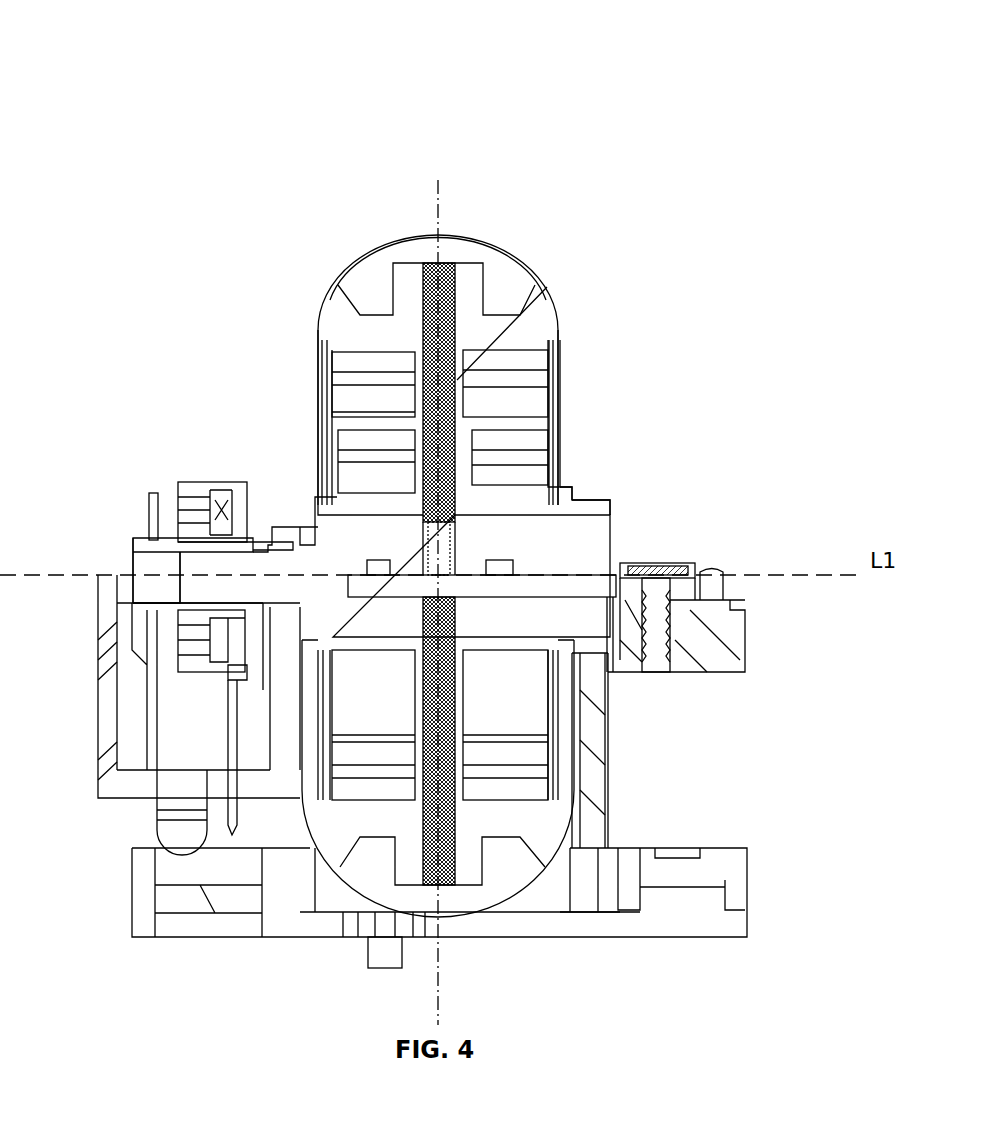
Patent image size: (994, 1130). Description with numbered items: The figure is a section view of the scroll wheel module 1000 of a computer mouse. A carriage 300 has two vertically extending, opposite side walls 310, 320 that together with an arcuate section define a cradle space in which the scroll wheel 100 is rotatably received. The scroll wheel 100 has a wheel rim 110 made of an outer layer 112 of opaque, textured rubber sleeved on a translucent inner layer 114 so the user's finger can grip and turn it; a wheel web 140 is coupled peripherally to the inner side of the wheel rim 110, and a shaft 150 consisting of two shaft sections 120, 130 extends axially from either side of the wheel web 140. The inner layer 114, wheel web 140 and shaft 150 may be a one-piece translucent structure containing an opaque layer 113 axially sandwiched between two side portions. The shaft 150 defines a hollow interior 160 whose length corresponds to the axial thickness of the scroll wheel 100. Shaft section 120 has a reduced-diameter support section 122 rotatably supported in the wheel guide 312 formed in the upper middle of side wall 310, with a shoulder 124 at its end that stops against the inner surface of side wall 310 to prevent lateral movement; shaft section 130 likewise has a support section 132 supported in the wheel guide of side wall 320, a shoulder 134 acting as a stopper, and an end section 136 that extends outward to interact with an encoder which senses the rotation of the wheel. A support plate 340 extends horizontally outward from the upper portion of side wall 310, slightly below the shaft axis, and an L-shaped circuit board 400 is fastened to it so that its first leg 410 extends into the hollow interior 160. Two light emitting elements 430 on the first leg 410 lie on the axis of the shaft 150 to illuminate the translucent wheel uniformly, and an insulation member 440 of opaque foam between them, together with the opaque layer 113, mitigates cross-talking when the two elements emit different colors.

The scroll wheel module 1000 is at (712, 78).
The scroll wheel 100 is at (577, 307).
The wheel rim 110 is at (303, 283).
The outer layer 112 is at (507, 263).
The opaque layer 113 is at (457, 290).
The inner layer 114 is at (547, 337).
The wheel web 140 is at (463, 433).
The shaft 150 is at (477, 490).
The shaft section 120 is at (545, 500).
The shoulder 124 is at (573, 487).
The support section 122 is at (603, 503).
The hollow interior 160 is at (585, 548).
The shaft section 130 is at (365, 500).
The support section 132 is at (283, 555).
The shoulder 134 is at (310, 535).
The end section 136 is at (200, 570).
The light emitting elements 430 is at (377, 560).
The insulation member 440 is at (452, 543).
The first leg 410 is at (517, 592).
The circuit board 400 is at (735, 575).
The support plate 340 is at (725, 660).
The wheel guide 312 is at (592, 655).
The side wall 310 is at (600, 745).
The carriage 300 is at (590, 820).
The side wall 320 is at (280, 692).